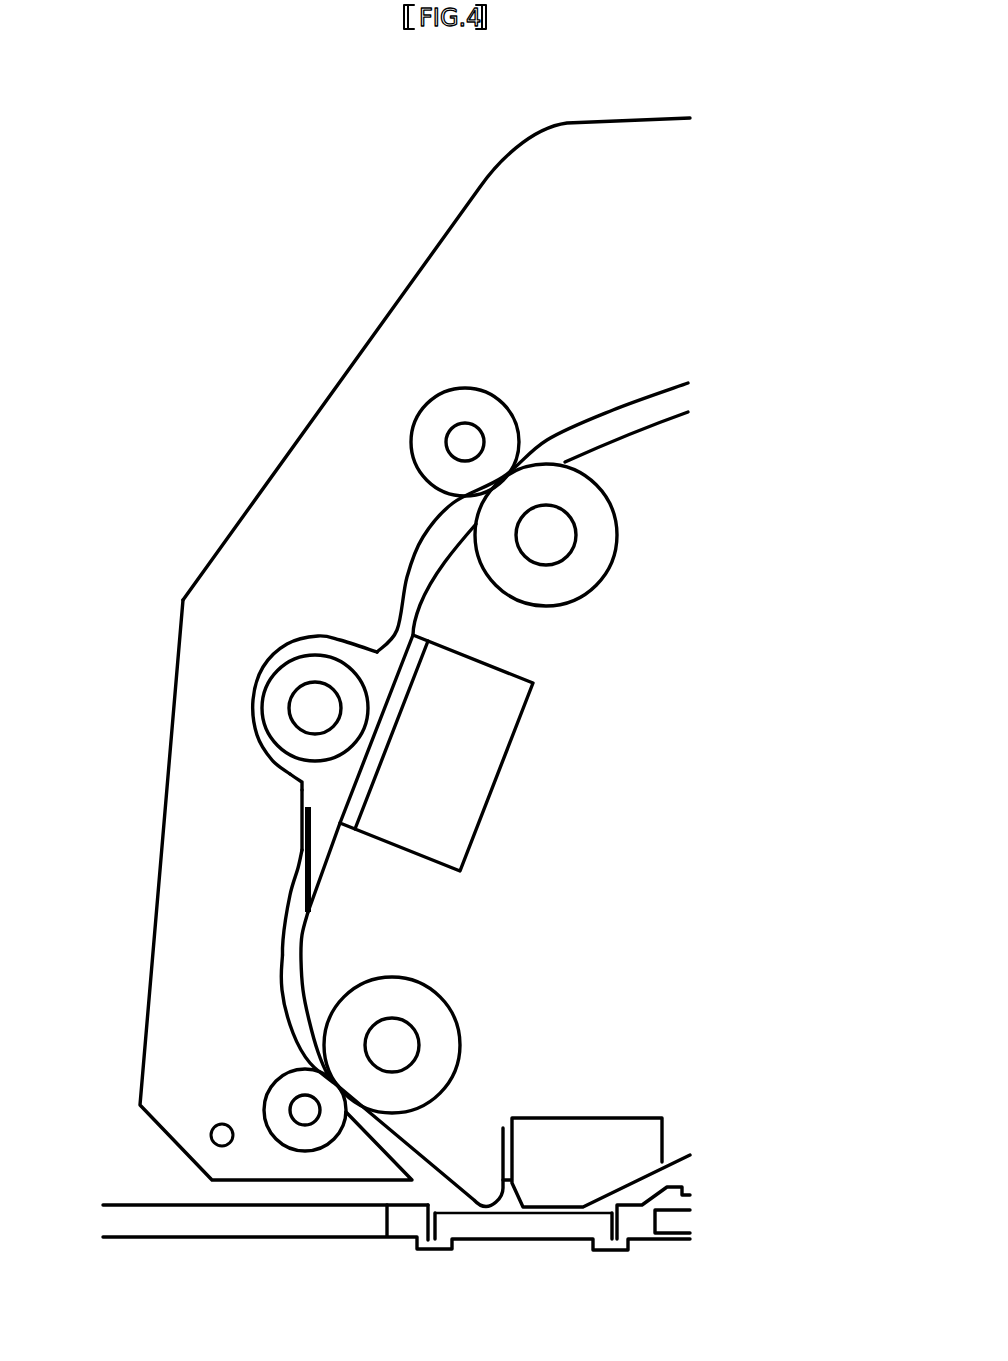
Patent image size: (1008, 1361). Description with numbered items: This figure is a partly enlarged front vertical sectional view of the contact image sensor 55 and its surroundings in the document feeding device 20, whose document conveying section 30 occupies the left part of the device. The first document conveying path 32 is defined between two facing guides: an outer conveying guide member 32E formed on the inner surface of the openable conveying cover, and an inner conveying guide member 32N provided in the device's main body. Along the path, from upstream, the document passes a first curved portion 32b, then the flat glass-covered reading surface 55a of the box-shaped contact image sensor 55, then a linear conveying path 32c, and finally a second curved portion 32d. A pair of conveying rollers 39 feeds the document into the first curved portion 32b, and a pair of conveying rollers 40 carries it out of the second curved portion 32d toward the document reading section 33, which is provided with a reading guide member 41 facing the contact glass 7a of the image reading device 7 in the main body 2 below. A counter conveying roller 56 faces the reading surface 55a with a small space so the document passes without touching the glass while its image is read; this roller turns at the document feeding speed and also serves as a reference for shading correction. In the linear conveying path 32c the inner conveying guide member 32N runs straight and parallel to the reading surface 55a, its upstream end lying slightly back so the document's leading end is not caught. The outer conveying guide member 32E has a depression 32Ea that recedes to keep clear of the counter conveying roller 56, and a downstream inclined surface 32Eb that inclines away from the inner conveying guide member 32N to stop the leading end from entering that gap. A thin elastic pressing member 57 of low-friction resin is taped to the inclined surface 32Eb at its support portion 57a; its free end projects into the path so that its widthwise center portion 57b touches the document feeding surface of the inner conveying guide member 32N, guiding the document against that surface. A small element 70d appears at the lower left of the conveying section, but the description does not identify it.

The main body 2 is at (158, 1197).
The image reading device 7 is at (376, 1282).
The contact glass 7a is at (477, 1240).
The document feeding device 20 is at (177, 212).
The document conveying section 30 is at (366, 307).
The first document conveying path 32 is at (405, 597).
The first curved portion 32b is at (645, 412).
The linear conveying path 32c is at (333, 788).
The second curved portion 32d is at (288, 1000).
The outer conveying guide member 32E is at (298, 932).
The depression 32Ea is at (253, 697).
The inclined surface 32Eb is at (300, 790).
The inner conveying guide member 32N is at (311, 877).
The document reading section 33 is at (553, 1213).
The conveying rollers 39 is at (536, 421).
The conveying rollers 40 is at (440, 982).
The reading guide member 41 is at (583, 1186).
The contact image sensor 55 is at (503, 777).
The reading surface 55a is at (393, 683).
The counter conveying roller 56 is at (285, 677).
The pressing member 57 is at (305, 873).
The support portion 57a is at (302, 820).
The center portion 57b is at (315, 912).
The pivot shaft 70d is at (213, 1130).